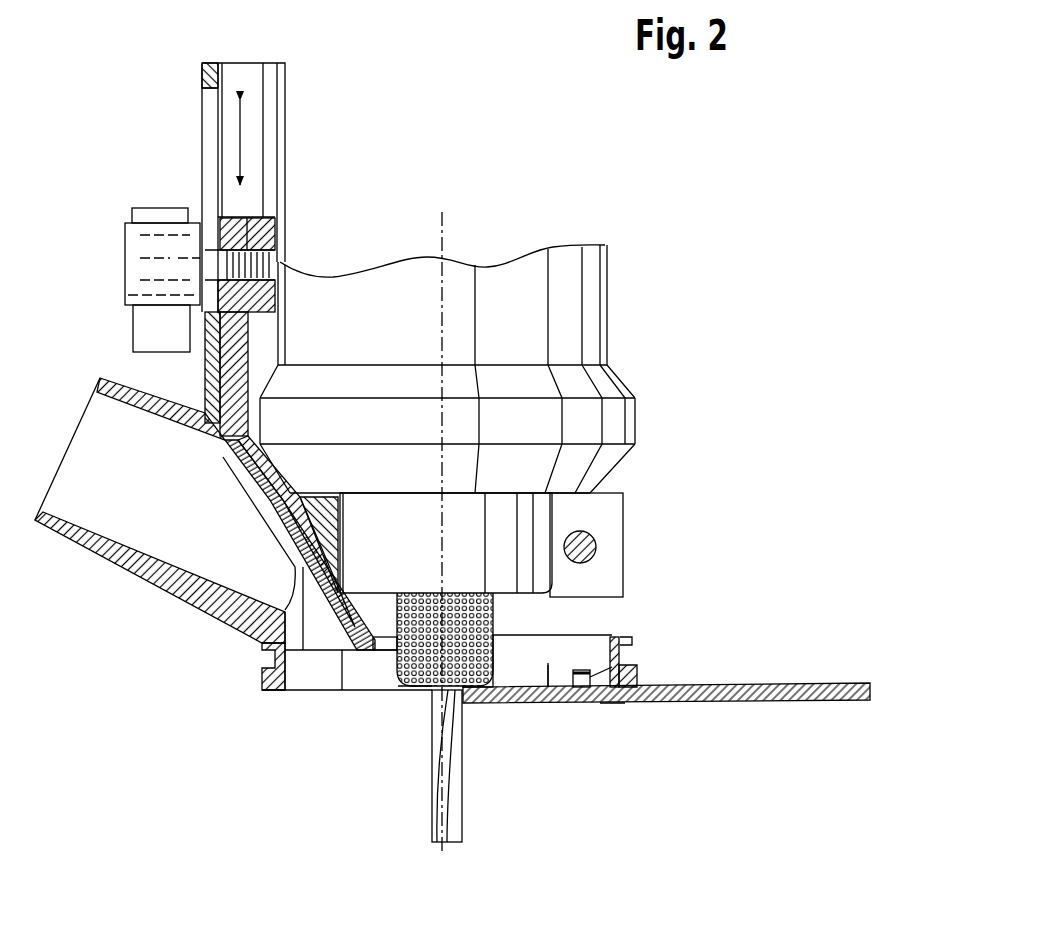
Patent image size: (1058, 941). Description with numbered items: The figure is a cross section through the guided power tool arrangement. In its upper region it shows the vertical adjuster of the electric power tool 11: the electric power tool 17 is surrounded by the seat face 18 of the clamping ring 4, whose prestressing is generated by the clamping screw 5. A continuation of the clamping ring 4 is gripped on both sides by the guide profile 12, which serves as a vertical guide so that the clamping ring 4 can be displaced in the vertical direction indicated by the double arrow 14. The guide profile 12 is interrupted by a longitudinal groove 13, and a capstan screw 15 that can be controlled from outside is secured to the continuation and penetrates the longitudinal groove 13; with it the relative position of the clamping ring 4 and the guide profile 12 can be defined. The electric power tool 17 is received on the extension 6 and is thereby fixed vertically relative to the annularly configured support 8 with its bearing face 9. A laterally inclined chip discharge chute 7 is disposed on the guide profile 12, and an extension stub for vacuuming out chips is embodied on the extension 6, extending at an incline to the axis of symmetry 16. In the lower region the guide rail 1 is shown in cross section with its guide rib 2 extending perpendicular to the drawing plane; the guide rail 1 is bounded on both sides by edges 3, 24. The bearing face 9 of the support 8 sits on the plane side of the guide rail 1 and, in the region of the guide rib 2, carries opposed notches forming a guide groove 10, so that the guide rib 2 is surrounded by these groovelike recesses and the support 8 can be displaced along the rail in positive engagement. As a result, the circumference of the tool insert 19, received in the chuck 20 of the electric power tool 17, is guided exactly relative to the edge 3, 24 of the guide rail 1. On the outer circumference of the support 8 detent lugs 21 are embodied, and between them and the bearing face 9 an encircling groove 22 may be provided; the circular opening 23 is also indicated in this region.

The guide rail 1 is at (802, 684).
The guide rib 2 is at (622, 668).
The edge 3 is at (877, 705).
The clamping ring 4 is at (606, 516).
The clamping screw 5 is at (598, 548).
The extension 6 is at (236, 387).
The chip discharge chute 7 is at (118, 463).
The support 8 is at (637, 670).
The bearing face 9 is at (276, 694).
The guide groove 10 is at (589, 675).
The vertical adjuster of electric power tool 11 is at (312, 108).
The guide profile 12 is at (272, 173).
The longitudinal groove 13 is at (210, 174).
The adjustment course 14 is at (238, 138).
The capstan screw 15 is at (155, 235).
The segment axis 16 is at (447, 217).
The electric power tool 17 is at (567, 316).
The seat face 18 is at (558, 516).
The tool insert 19 is at (455, 792).
The chuck 20 is at (410, 678).
The detent lug 21 is at (627, 637).
The encircling groove 22 is at (257, 657).
The circular opening 23 is at (552, 702).
The edge guide 24 is at (446, 703).